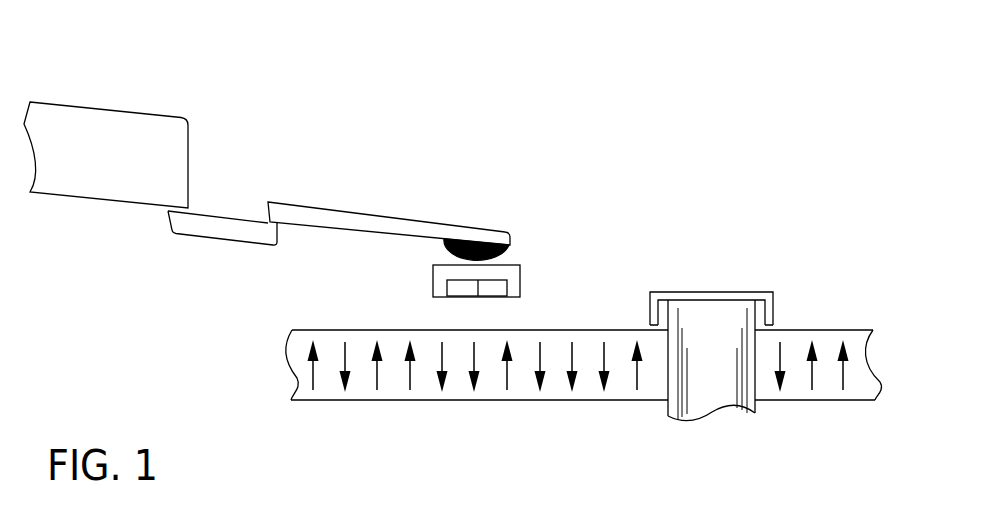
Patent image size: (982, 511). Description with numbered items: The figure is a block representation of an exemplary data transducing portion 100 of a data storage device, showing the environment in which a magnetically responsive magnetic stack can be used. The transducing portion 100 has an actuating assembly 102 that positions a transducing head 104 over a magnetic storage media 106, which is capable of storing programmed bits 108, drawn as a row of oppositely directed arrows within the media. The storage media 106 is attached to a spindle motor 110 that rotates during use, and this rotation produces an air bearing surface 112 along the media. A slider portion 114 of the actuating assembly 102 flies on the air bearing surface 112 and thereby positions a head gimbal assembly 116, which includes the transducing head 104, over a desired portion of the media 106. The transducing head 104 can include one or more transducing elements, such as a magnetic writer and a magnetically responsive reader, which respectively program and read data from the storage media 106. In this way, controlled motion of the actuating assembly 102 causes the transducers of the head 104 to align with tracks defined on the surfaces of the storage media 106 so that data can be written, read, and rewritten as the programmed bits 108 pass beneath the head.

The data transducing portion 100 is at (718, 80).
The actuating assembly 102 is at (290, 110).
The transducing head 104 is at (433, 286).
The magnetic storage media 106 is at (303, 330).
The programmed bits 108 is at (442, 400).
The spindle motor 110 is at (715, 282).
The air bearing surface 112 is at (520, 313).
The slider portion 114 is at (397, 216).
The head gimbal assembly 116 is at (525, 247).